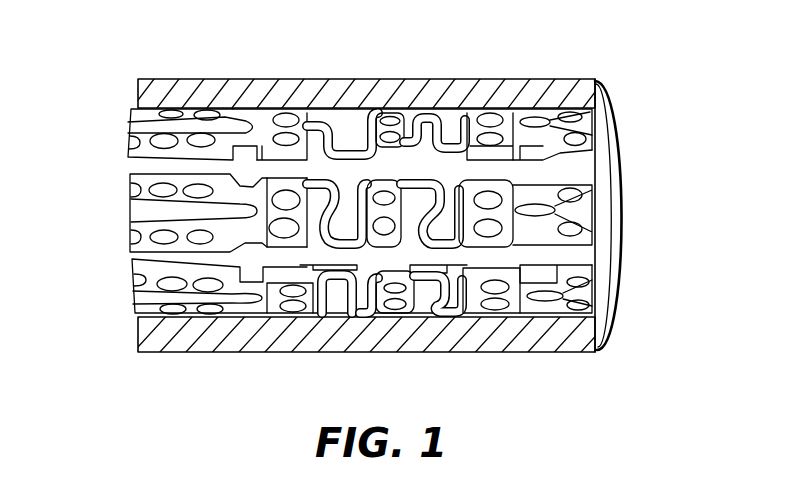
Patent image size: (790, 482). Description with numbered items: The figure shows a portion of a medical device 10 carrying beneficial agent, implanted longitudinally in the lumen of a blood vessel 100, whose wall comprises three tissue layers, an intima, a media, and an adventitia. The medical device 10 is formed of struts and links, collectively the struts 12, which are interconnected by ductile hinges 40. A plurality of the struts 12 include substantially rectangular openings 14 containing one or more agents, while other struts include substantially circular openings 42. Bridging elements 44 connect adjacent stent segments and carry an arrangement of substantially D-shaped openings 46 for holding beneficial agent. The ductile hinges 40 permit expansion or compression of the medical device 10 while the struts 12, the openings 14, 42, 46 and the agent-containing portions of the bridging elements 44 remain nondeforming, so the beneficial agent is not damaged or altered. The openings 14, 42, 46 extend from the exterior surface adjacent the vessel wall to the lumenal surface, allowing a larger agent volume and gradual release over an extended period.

The medical device 10 is at (106, 289).
The struts 12 is at (142, 220).
The openings 14 is at (150, 130).
The ductile hinges 40 is at (543, 213).
The circular openings 42 is at (282, 200).
The bridging elements 44 is at (343, 118).
The D-shaped openings 46 is at (397, 117).
The blood vessel 100 is at (262, 340).